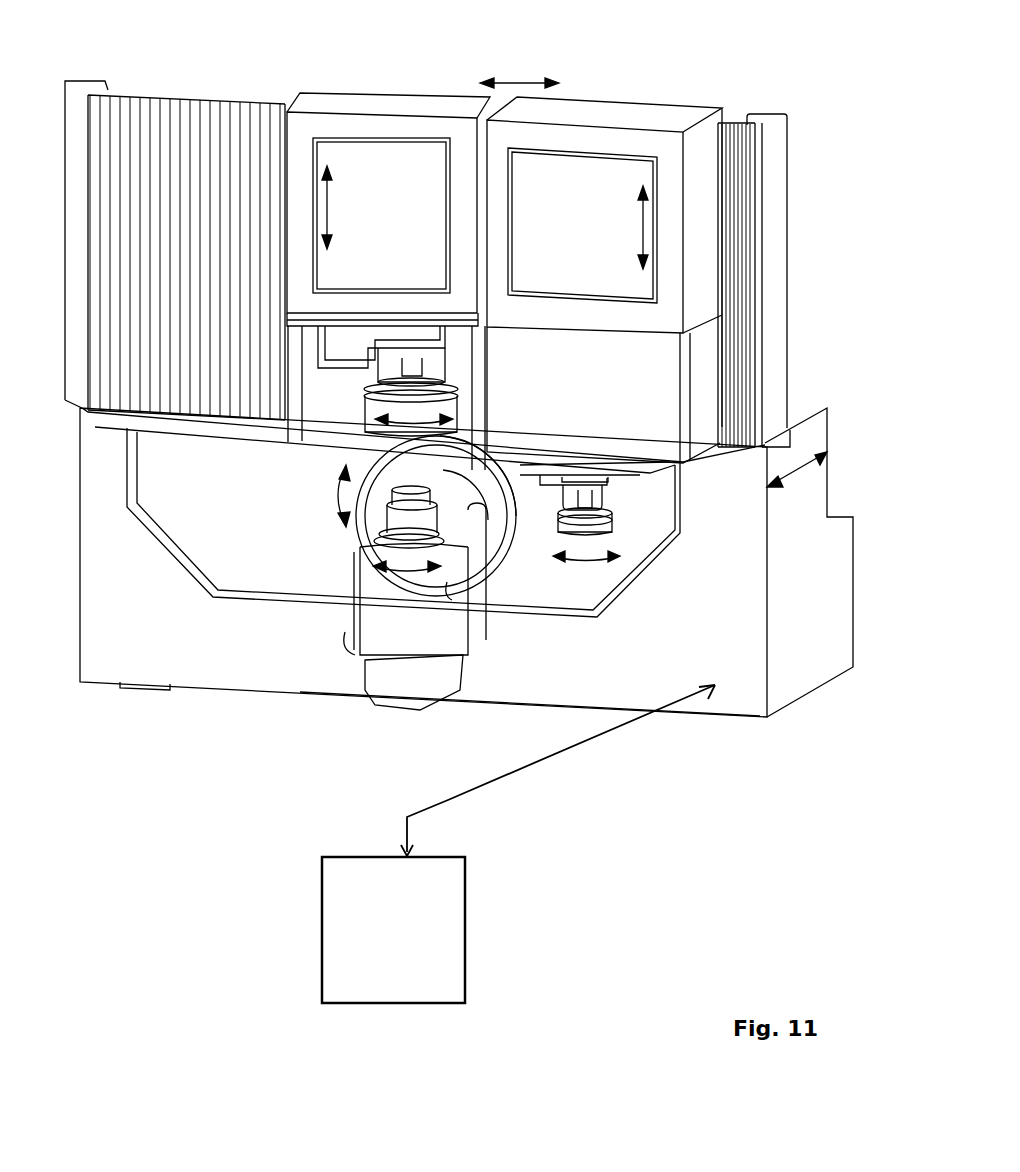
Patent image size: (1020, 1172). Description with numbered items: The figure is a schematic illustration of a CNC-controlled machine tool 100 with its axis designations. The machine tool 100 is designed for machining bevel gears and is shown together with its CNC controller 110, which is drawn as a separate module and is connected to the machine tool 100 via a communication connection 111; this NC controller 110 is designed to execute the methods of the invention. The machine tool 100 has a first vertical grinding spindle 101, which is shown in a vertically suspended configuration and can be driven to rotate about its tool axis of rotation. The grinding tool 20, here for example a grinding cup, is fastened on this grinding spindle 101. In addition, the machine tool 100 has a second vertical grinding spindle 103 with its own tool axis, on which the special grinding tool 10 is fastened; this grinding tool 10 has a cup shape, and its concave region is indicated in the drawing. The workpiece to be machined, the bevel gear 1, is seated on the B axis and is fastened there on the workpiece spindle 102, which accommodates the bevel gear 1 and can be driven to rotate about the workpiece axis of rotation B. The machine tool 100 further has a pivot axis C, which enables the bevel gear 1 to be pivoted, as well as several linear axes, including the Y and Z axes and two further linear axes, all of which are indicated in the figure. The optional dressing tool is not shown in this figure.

The machine tool 100 is at (459, 370).
The first vertical grinding spindle 101 is at (372, 357).
The grinding tool 20 is at (368, 422).
The bevel gear 1 is at (388, 498).
The workpiece spindle 102 is at (430, 522).
The second vertical grinding spindle 103 is at (603, 490).
The special grinding tool 10 is at (613, 518).
The communication connection 111 is at (448, 800).
The CNC controller 110 is at (393, 930).